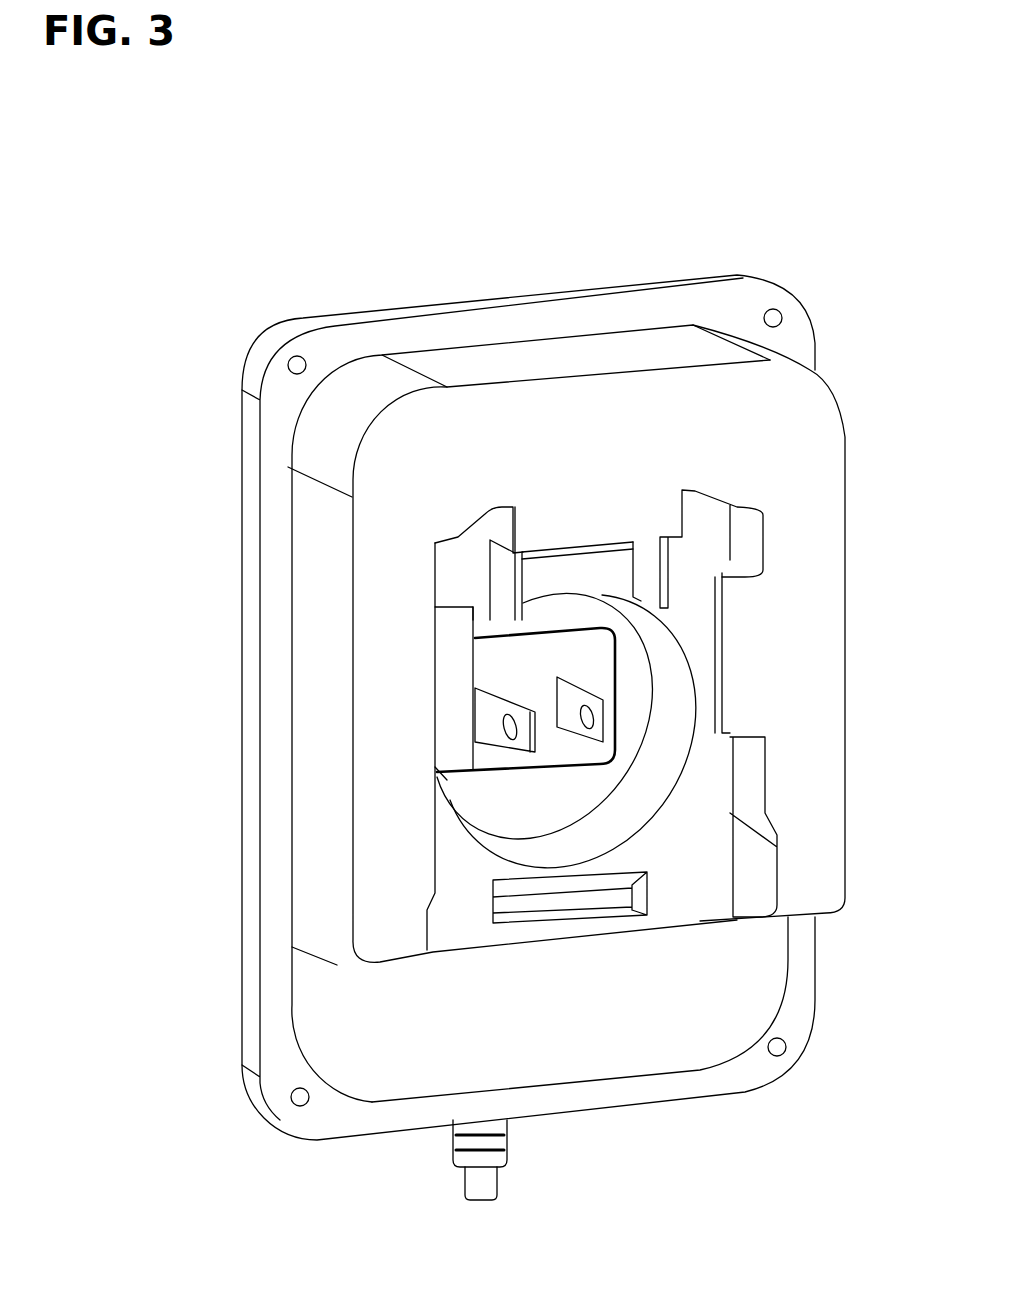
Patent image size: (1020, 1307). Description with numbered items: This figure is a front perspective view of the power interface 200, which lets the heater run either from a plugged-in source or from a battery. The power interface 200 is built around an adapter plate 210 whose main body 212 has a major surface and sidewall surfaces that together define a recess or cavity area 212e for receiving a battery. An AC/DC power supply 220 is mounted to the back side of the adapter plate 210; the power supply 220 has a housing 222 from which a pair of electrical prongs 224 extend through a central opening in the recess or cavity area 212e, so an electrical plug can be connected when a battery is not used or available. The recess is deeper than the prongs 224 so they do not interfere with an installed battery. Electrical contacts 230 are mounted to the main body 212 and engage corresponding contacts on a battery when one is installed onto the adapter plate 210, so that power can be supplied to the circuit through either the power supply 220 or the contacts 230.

The power interface 200 is at (456, 266).
The adapter plate 210 is at (262, 623).
The main body 212 is at (286, 852).
The recess or cavity area 212e is at (520, 825).
The AC/DC power supply 220 is at (537, 685).
The housing 222 is at (520, 763).
The electrical prongs 224 is at (510, 733).
The electrical contacts 230 is at (517, 598).